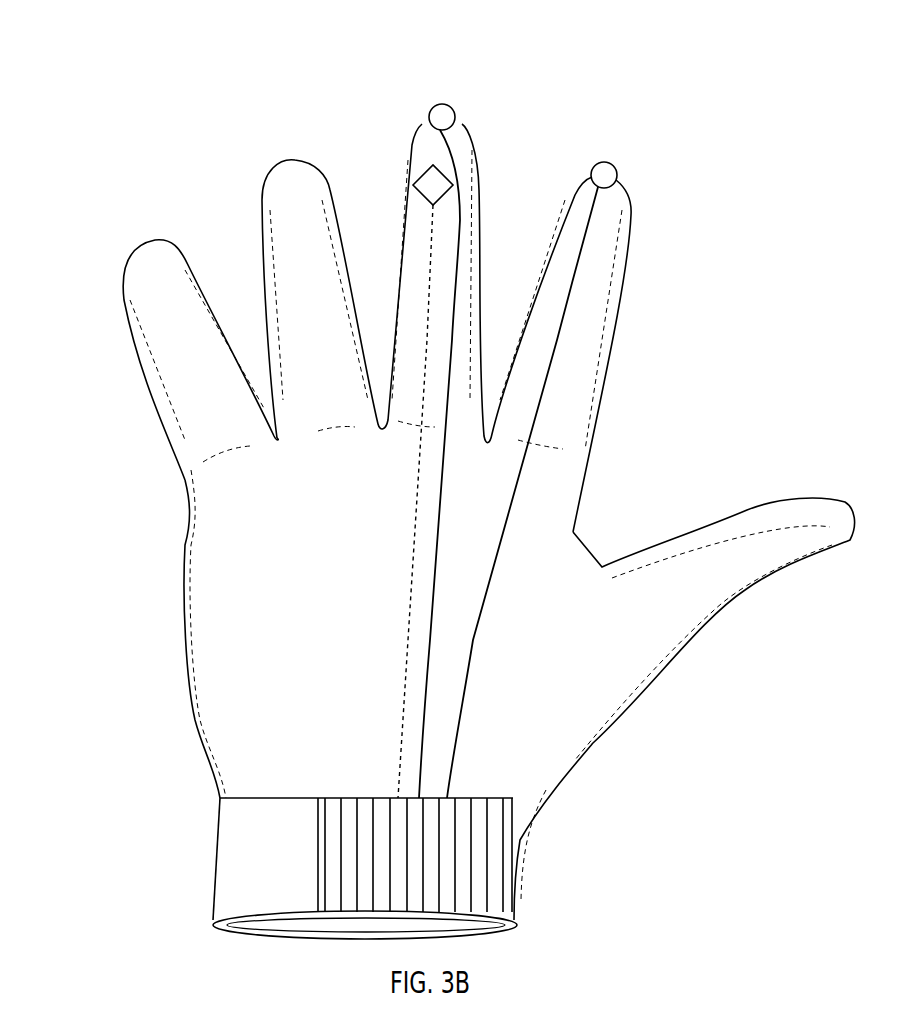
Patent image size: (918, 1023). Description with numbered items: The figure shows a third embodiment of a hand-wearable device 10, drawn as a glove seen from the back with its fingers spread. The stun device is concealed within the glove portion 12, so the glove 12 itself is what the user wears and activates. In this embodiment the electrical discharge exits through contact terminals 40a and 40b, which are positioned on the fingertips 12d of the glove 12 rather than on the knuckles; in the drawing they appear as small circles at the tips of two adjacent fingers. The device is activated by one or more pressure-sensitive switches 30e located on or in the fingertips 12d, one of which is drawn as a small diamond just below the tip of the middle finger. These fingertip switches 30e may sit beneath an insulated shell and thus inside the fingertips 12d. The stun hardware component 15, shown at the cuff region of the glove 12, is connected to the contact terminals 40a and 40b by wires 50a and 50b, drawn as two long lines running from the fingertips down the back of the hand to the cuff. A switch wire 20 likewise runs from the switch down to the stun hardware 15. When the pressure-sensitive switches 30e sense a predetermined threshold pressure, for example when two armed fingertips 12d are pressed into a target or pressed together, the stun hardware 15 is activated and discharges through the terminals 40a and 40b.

The hand-wearable device 10 is at (816, 260).
The glove portion 12 is at (228, 545).
The fingertips 12d is at (128, 254).
The stun hardware component 15 is at (576, 853).
The switch wire 20 is at (376, 650).
The pressure-sensitive switch 30e is at (362, 130).
The contact terminal 40a is at (487, 115).
The contact terminal 40b is at (636, 142).
The wire 50a is at (558, 408).
The wire 50b is at (558, 408).